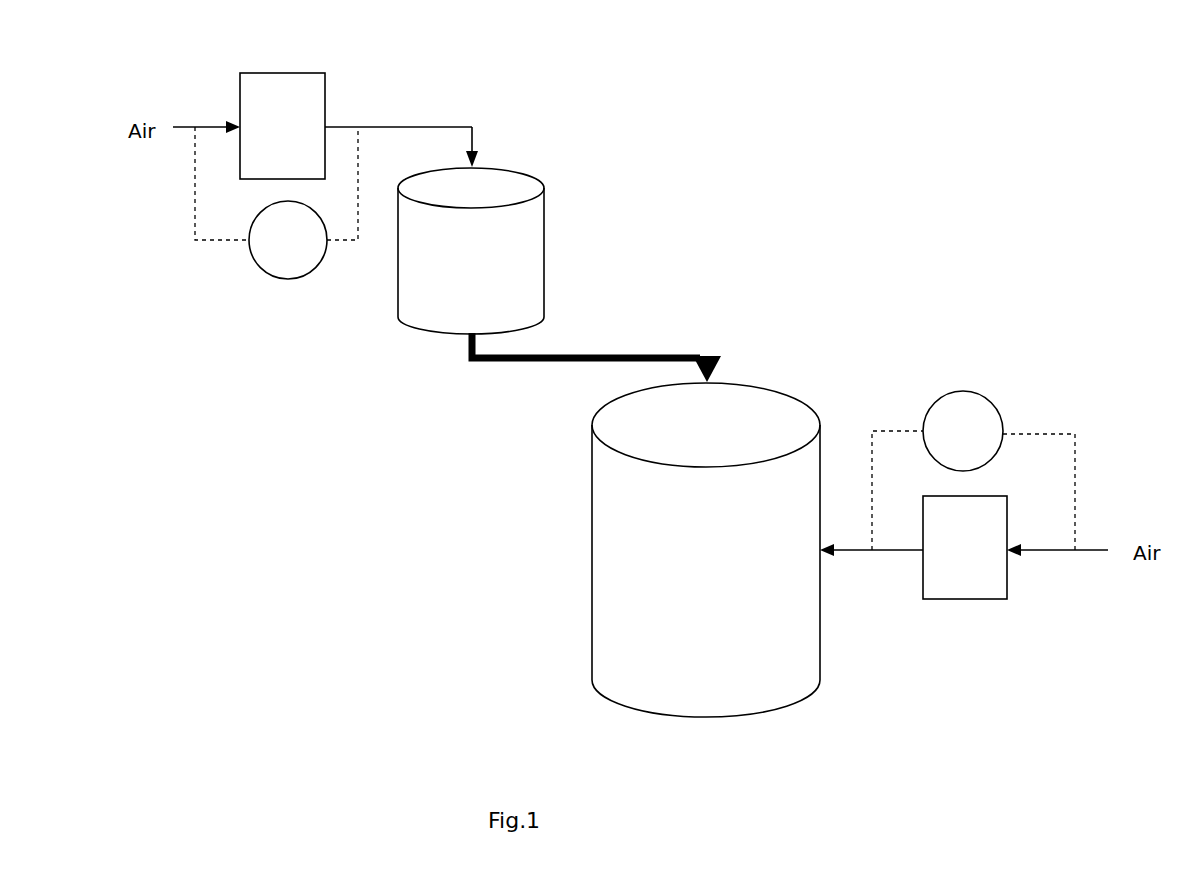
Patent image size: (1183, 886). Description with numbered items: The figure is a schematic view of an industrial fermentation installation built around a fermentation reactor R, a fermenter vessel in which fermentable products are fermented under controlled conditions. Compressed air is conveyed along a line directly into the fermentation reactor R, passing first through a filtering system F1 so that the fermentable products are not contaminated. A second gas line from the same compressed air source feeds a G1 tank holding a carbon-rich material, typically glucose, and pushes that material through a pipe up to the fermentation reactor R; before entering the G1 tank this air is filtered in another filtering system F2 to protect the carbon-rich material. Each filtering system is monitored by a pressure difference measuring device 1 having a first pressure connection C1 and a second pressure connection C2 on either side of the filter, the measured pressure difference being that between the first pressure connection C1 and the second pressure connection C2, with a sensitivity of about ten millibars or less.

The pressure difference measuring device 1 is at (250, 286).
The filtering system F1 is at (950, 585).
The filtering system F2 is at (304, 108).
The tank G1 is at (503, 252).
The fermentation reactor R is at (728, 450).
The first pressure connection C1 is at (190, 158).
The second pressure connection C2 is at (364, 158).